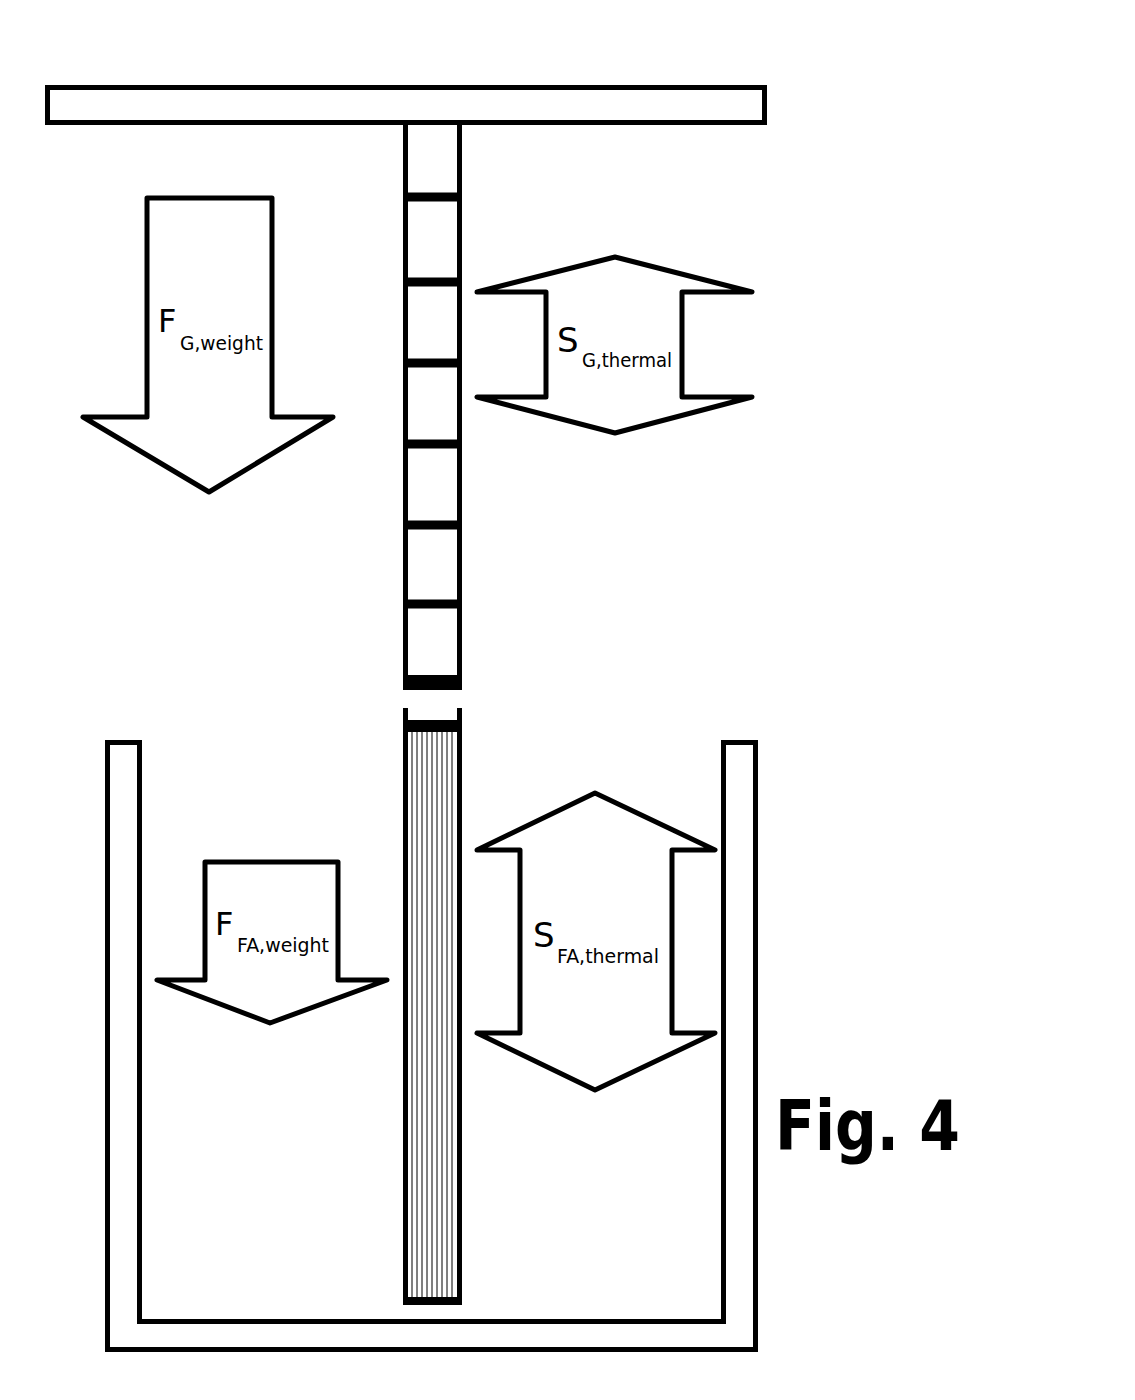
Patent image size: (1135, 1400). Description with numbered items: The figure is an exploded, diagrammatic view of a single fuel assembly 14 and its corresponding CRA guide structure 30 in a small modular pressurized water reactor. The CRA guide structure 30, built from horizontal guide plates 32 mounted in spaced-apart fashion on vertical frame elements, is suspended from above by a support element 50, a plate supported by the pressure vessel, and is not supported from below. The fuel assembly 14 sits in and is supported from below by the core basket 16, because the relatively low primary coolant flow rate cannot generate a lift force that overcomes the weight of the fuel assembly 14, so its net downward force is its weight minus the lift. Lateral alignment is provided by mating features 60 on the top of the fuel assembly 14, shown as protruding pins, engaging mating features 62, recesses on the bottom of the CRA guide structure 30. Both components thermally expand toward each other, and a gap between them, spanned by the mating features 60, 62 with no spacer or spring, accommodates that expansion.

The support element 50 is at (710, 92).
The CRA guide structure 30 is at (372, 210).
The horizontal guide plates 32 is at (433, 282).
The mating features 62 is at (405, 688).
The mating features 60 is at (405, 716).
The fuel assembly 14 is at (436, 1117).
The core basket 16 is at (122, 866).